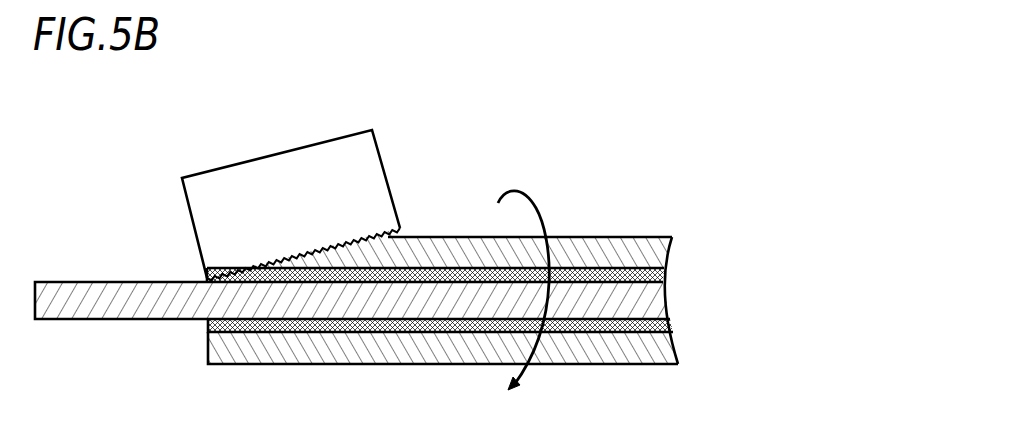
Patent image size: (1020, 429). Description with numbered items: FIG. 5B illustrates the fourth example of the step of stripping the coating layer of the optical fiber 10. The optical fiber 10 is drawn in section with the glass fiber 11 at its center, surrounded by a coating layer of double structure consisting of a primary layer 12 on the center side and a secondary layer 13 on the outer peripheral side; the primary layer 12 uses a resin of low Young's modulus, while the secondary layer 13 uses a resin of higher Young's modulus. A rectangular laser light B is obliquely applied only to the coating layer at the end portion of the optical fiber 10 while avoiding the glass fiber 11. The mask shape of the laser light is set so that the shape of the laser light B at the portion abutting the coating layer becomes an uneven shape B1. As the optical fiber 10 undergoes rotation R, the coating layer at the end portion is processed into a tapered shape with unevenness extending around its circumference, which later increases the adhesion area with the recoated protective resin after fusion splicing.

The optical fiber 10 is at (436, 292).
The glass fiber 11 is at (487, 330).
The primary layer 12 is at (665, 275).
The secondary layer 13 is at (668, 245).
The laser light B is at (313, 184).
The uneven shape B1 is at (352, 244).
The rotation R is at (540, 207).